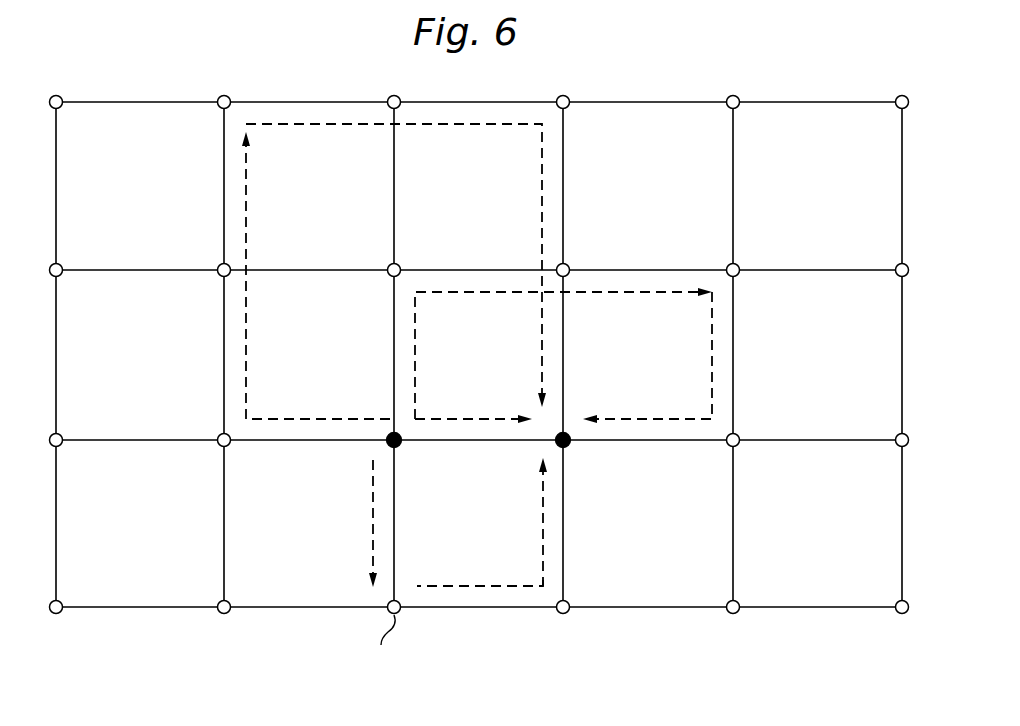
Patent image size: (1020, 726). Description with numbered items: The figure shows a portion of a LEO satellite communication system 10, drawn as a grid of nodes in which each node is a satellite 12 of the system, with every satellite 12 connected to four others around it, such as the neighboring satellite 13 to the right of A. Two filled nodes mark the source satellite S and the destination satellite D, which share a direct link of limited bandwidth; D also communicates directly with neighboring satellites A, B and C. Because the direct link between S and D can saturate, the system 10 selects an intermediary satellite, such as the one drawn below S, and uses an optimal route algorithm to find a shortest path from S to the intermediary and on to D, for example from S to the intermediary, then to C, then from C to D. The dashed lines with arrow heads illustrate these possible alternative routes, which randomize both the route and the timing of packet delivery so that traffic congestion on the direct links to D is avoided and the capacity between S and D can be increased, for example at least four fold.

The LEO satellite communication system 10 is at (643, 78).
The satellite 12 is at (223, 94).
The node 13 is at (726, 265).